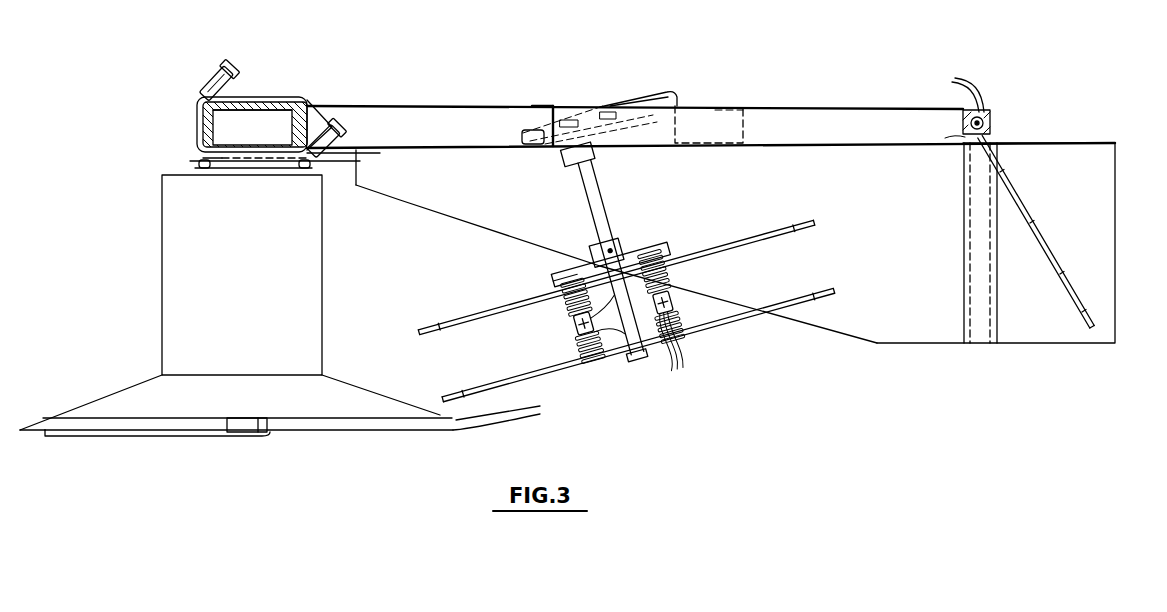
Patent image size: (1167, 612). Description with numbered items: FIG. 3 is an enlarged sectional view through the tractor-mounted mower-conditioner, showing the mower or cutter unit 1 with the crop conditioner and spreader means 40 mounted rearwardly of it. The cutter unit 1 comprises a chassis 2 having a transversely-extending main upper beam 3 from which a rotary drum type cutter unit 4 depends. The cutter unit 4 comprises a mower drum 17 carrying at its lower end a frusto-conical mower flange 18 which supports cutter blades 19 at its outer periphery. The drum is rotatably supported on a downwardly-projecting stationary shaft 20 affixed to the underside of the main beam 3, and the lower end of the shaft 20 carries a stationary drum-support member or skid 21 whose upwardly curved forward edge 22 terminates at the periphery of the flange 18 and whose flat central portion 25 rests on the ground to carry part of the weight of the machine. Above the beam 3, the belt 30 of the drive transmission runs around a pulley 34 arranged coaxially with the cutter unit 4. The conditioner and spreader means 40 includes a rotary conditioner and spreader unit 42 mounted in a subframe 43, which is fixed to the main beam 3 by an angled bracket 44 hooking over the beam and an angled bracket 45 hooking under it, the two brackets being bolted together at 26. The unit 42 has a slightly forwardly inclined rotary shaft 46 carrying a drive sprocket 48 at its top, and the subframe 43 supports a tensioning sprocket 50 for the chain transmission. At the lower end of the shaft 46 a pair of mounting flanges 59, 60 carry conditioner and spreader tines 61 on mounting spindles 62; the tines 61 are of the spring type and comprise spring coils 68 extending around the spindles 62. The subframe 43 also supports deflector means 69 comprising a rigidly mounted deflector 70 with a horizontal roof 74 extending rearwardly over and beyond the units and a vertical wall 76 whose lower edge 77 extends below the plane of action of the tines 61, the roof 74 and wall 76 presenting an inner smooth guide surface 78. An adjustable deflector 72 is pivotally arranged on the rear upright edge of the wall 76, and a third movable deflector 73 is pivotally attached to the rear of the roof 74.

The mower or cutter unit 1 is at (424, 87).
The chassis 2 is at (205, 127).
The main and upper beam 3 is at (270, 101).
The rotary drum type cutter unit 4 is at (158, 313).
The mower drum 17 is at (323, 306).
The frusto-conical mower flange 18 is at (118, 390).
The cutter blade 19 is at (50, 416).
The stationary shaft 20 is at (263, 160).
The drum-support member or skid 21 is at (320, 434).
The upwardly curved forward edge 22 is at (47, 436).
The flat central portion 25 is at (140, 438).
The bolted connection 26 is at (222, 72).
The belt 30 is at (313, 165).
The pulley 34 is at (196, 160).
The crop conditioner and spreader means 40 is at (749, 346).
The rotary conditioner and spreader unit 42 is at (557, 373).
The subframe 43 is at (368, 106).
The angled bracket 44 is at (313, 100).
The angled bracket 45 is at (197, 105).
The rotary shaft 46 is at (602, 212).
The drive sprocket 48 is at (535, 128).
The tensioning sprocket 50 is at (668, 92).
The mounting flange 59 is at (553, 278).
The mounting flange 60 is at (614, 360).
The conditioner and spreader tine 61 is at (758, 242).
The mounting spindle 62 is at (688, 293).
The spring coil 68 is at (671, 355).
The deflector means 69 is at (875, 74).
The rigidly mounted deflector 70 is at (838, 147).
The adjustable deflector 72 is at (1115, 212).
The third movable deflector 73 is at (1037, 228).
The roof or top section 74 is at (405, 148).
The vertical wall 76 is at (861, 201).
The lower edge 77 is at (932, 345).
The inner smooth guide surface 78 is at (884, 273).